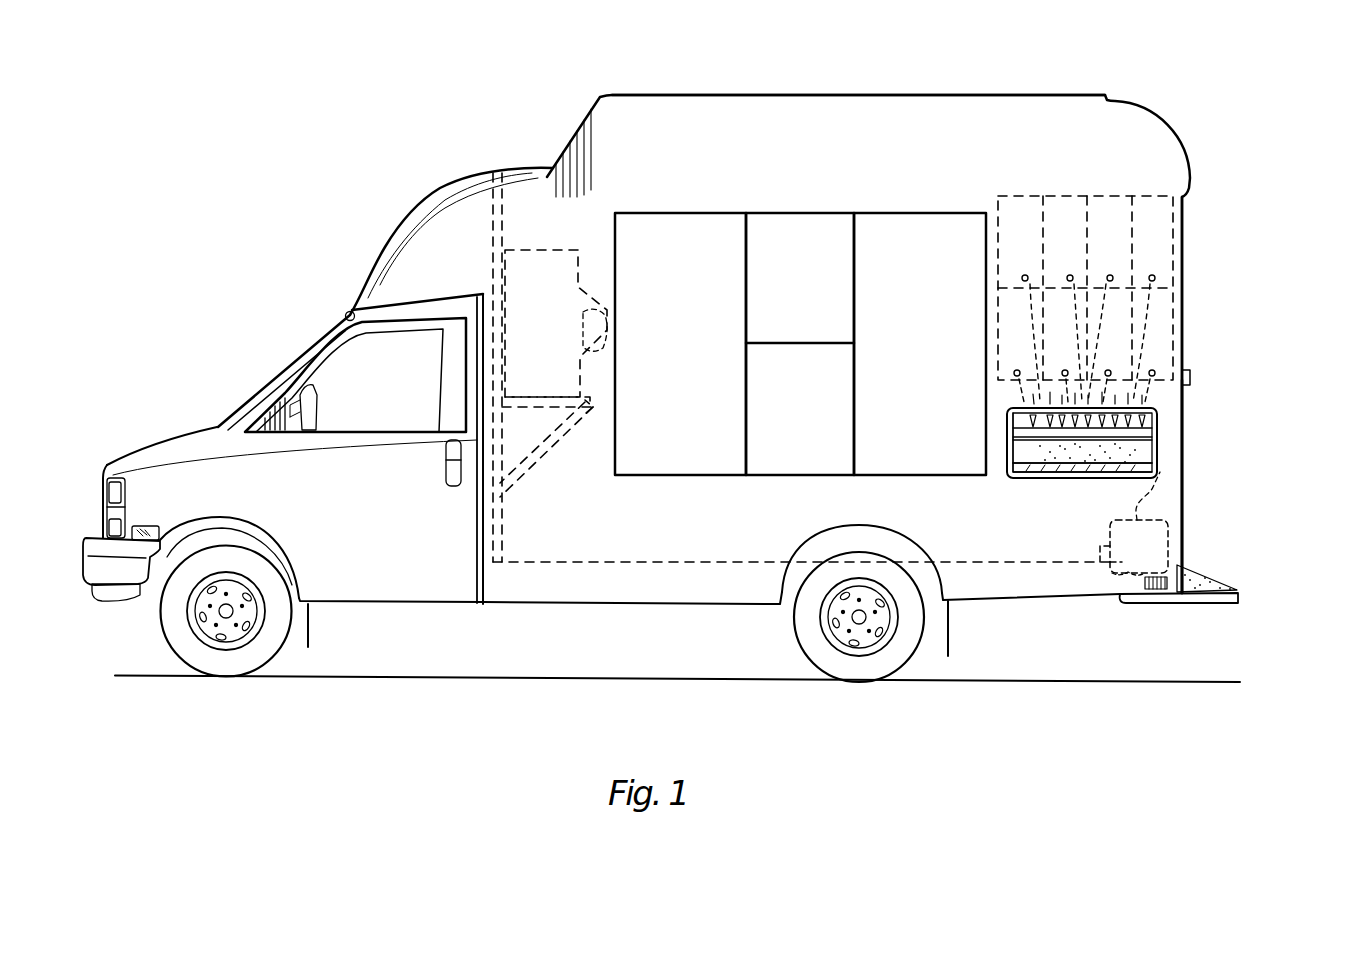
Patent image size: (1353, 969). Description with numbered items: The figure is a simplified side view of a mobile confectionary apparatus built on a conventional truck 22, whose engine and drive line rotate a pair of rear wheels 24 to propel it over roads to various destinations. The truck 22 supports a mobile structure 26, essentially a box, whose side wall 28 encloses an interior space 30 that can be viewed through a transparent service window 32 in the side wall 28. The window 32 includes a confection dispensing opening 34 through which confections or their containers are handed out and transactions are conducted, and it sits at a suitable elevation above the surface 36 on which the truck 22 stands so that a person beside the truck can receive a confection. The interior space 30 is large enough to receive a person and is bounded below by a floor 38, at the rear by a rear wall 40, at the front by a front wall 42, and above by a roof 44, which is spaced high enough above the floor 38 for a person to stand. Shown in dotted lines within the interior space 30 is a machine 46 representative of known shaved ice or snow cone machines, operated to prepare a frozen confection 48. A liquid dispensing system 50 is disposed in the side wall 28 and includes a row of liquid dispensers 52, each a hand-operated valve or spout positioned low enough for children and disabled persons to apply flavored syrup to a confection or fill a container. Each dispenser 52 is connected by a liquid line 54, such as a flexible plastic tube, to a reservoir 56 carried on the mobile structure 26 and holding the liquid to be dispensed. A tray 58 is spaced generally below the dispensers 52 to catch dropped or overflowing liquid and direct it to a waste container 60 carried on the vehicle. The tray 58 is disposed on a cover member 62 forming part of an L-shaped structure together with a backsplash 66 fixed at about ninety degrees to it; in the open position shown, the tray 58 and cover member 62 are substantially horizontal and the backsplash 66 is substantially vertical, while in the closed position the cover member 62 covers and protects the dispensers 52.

The truck 22 is at (378, 262).
The rear wheels 24 is at (794, 637).
The mobile structure 26 is at (847, 93).
The side wall 28 is at (1183, 207).
The interior space 30 is at (882, 232).
The transparent service window 32 is at (673, 212).
The confection dispensing opening 34 is at (790, 417).
The surface 36 is at (1197, 681).
The floor 38 is at (568, 561).
The rear wall 40 is at (1182, 443).
The front wall 42 is at (493, 235).
The roof 44 is at (743, 93).
The machine 46 is at (543, 250).
The frozen confection 48 is at (605, 337).
The liquid dispensing system 50 is at (1160, 422).
The liquid dispenser 52 is at (1067, 418).
The liquid line 54 is at (1097, 290).
The reservoir 56 is at (1060, 195).
The tray 58 is at (1007, 476).
The waste container 60 is at (1168, 535).
The cover member 62 is at (1105, 480).
The backsplash 66 is at (1020, 450).